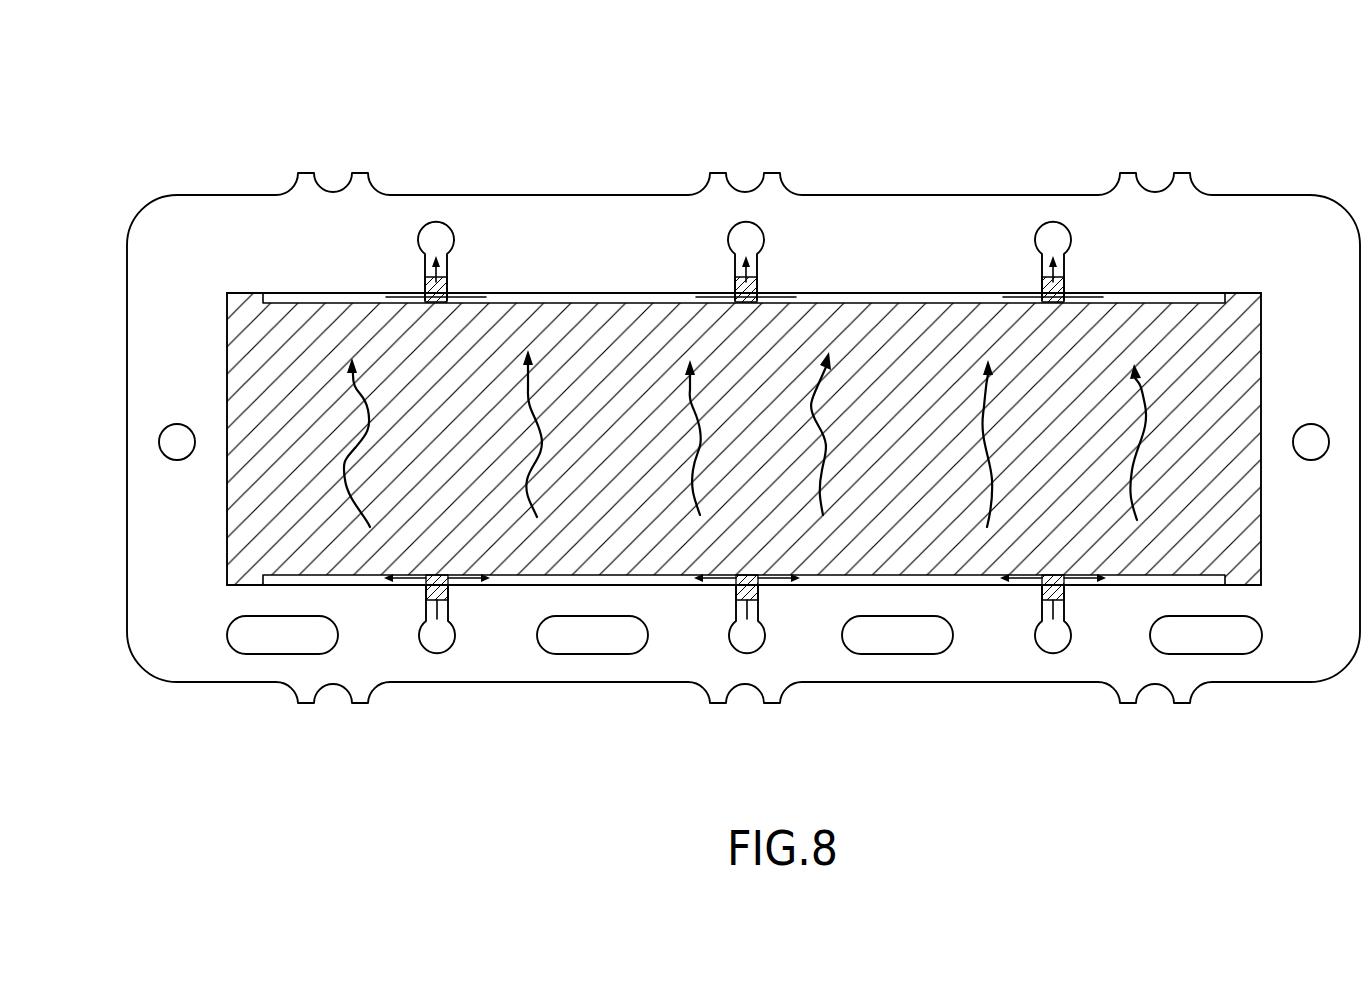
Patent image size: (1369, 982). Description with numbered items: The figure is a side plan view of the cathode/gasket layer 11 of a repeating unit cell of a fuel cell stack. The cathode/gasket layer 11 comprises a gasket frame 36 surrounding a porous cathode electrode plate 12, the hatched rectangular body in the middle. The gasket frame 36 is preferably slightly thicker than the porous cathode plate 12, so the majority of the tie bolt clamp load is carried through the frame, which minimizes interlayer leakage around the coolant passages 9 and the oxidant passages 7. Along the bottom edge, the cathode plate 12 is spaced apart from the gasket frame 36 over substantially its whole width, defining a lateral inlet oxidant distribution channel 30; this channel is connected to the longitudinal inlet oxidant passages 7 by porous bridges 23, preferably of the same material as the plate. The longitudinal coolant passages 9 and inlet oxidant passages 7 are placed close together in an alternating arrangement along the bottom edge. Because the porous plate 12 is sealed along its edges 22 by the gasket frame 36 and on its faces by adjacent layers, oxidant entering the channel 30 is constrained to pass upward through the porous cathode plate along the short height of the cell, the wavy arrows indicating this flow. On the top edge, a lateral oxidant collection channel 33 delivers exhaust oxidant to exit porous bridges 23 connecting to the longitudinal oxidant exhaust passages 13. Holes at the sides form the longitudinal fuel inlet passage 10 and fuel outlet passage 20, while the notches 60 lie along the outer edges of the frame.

The longitudinal inlet oxidant passage 7 is at (438, 655).
The longitudinal coolant passage 9 is at (238, 654).
The longitudinal fuel inlet passage 10 is at (1311, 424).
The cathode/gasket layer 11 is at (743, 378).
The porous cathode electrode plate 12 is at (294, 345).
The longitudinal oxidant exhaust passage 13 is at (454, 244).
The longitudinal fuel outlet passage 20 is at (178, 424).
The edges of porous plate 22 is at (1272, 330).
The porous bridge 23 is at (450, 286).
The lateral inlet oxidant distribution channel 30 is at (630, 580).
The lateral oxidant collection channel 33 is at (592, 298).
The gasket frame 36 is at (592, 210).
The notches 60 is at (355, 178).